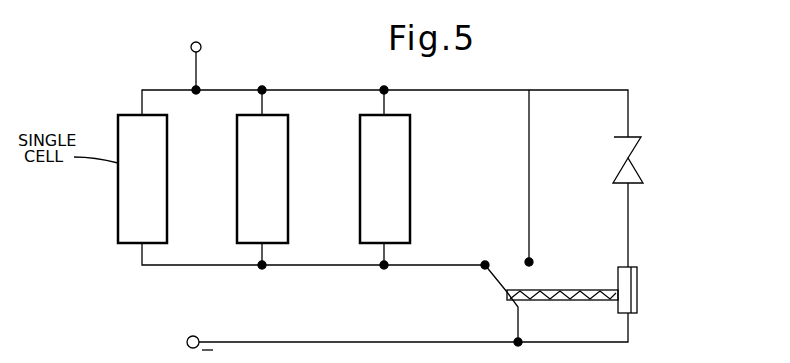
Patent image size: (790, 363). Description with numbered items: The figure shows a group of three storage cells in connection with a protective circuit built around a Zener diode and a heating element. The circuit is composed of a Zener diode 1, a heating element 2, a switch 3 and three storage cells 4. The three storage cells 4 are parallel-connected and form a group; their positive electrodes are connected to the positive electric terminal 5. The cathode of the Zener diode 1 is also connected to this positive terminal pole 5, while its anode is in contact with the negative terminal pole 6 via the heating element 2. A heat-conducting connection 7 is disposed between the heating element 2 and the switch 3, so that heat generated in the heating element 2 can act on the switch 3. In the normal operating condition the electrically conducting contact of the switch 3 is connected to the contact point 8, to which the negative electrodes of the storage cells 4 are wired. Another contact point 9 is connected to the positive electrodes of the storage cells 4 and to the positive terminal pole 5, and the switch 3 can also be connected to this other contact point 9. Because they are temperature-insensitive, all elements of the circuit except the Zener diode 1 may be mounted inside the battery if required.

The Zener diode 1 is at (633, 177).
The heating element 2 is at (640, 291).
The switch 3 is at (507, 292).
The storage cells 4 is at (157, 194).
The positive electric terminal 5 is at (191, 46).
The negative terminal pole 6 is at (186, 341).
The heat-conducting connection 7 is at (580, 300).
The contact point 8 is at (485, 258).
The contact point 9 is at (536, 263).